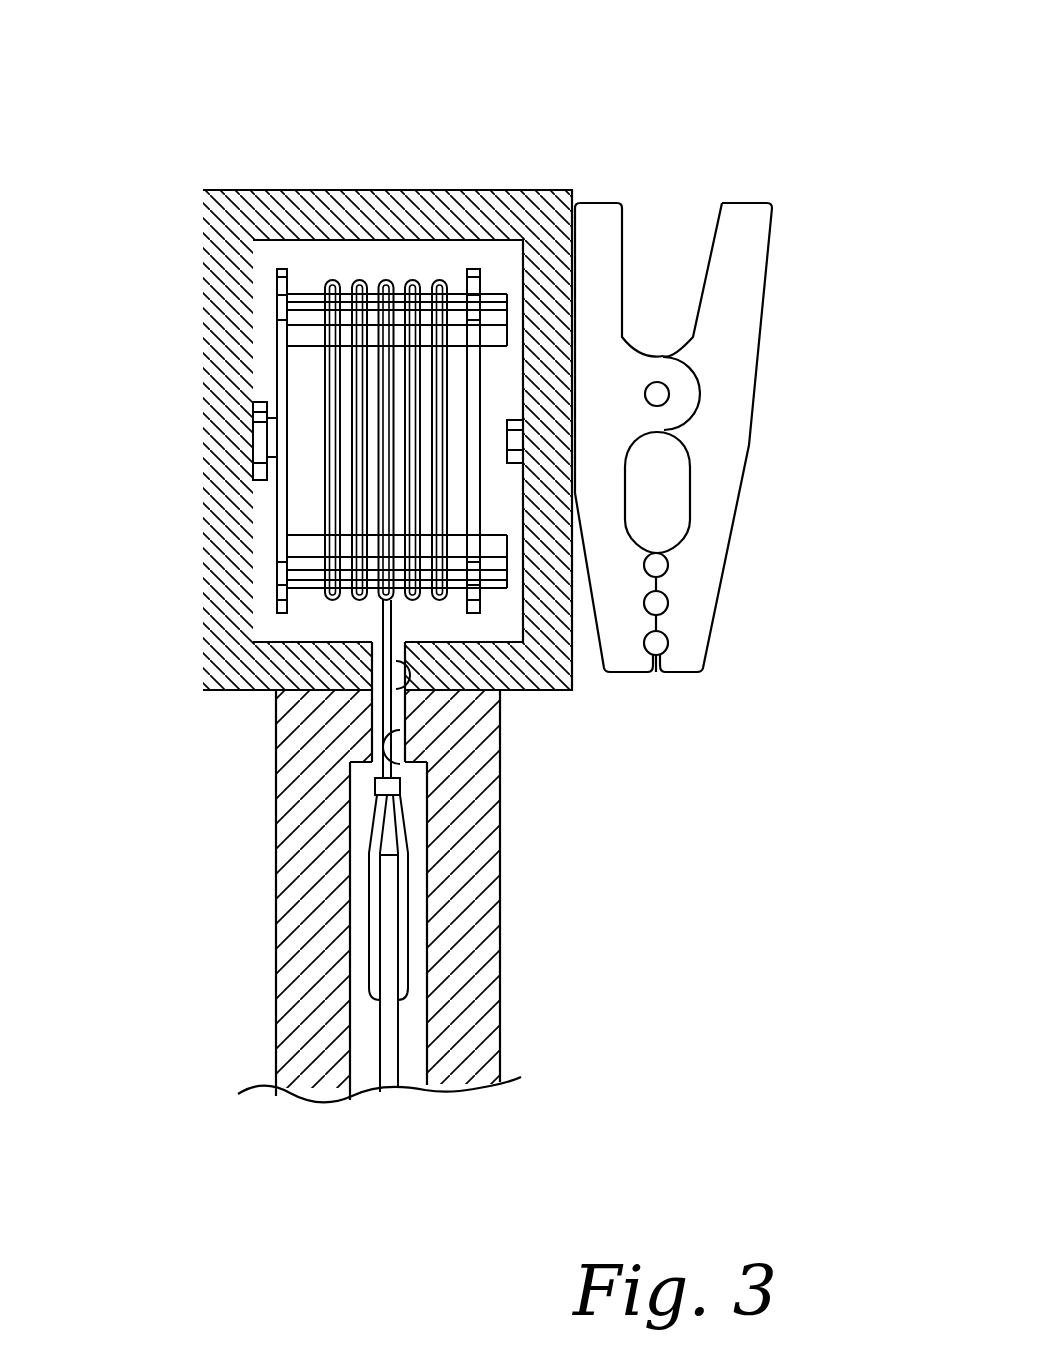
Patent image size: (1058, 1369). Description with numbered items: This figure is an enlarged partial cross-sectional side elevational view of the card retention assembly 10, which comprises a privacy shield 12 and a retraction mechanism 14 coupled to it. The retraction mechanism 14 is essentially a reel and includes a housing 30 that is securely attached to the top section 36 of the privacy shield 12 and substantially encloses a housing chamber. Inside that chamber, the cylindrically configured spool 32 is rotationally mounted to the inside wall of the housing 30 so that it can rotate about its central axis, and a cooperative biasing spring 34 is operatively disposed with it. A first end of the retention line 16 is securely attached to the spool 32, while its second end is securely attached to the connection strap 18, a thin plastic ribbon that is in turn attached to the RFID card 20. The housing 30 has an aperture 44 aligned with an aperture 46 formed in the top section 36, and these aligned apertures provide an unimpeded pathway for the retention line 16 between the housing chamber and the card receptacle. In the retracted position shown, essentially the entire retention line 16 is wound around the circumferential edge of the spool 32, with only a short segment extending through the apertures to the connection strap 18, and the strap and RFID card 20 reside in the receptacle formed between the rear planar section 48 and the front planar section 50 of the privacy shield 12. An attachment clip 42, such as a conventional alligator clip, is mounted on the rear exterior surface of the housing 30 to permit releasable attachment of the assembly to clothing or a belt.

The card retention assembly 10 is at (618, 68).
The privacy shield 12 is at (375, 896).
The retraction mechanism 14 is at (320, 397).
The retention line 16 is at (383, 622).
The connection strap 18 is at (373, 862).
The RFID card 20 is at (383, 1063).
The housing 30 is at (407, 208).
The spool 32 is at (283, 342).
The biasing spring 34 is at (490, 498).
The top section 36 is at (323, 693).
The attachment clip 42 is at (735, 312).
The aperture 44 is at (403, 695).
The aperture 46 is at (403, 763).
The rear planar section 48 is at (275, 977).
The front planar section 50 is at (500, 988).